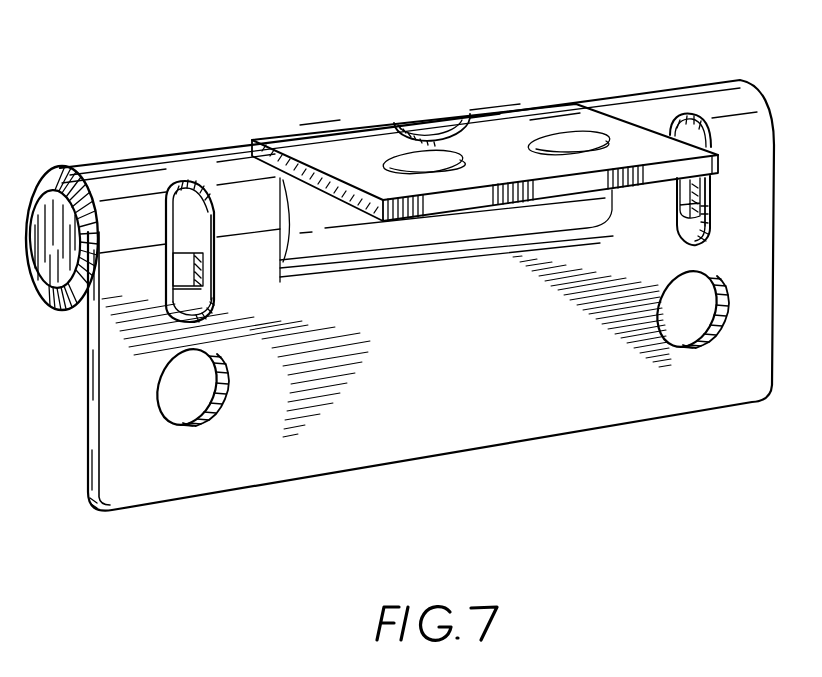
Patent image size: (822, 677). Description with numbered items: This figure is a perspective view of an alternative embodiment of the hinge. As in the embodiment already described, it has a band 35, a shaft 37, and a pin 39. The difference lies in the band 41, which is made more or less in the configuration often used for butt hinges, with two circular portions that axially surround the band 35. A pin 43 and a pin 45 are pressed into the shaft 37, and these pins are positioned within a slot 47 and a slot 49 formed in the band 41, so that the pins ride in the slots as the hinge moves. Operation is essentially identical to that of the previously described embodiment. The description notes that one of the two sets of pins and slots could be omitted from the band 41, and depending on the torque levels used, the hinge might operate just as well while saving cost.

The band 35 is at (340, 152).
The shaft 37 is at (53, 287).
The pin 39 is at (405, 122).
The band 41 is at (443, 433).
The pin 43 is at (677, 198).
The pin 45 is at (167, 246).
The slot 47 is at (708, 198).
The slot 49 is at (214, 262).